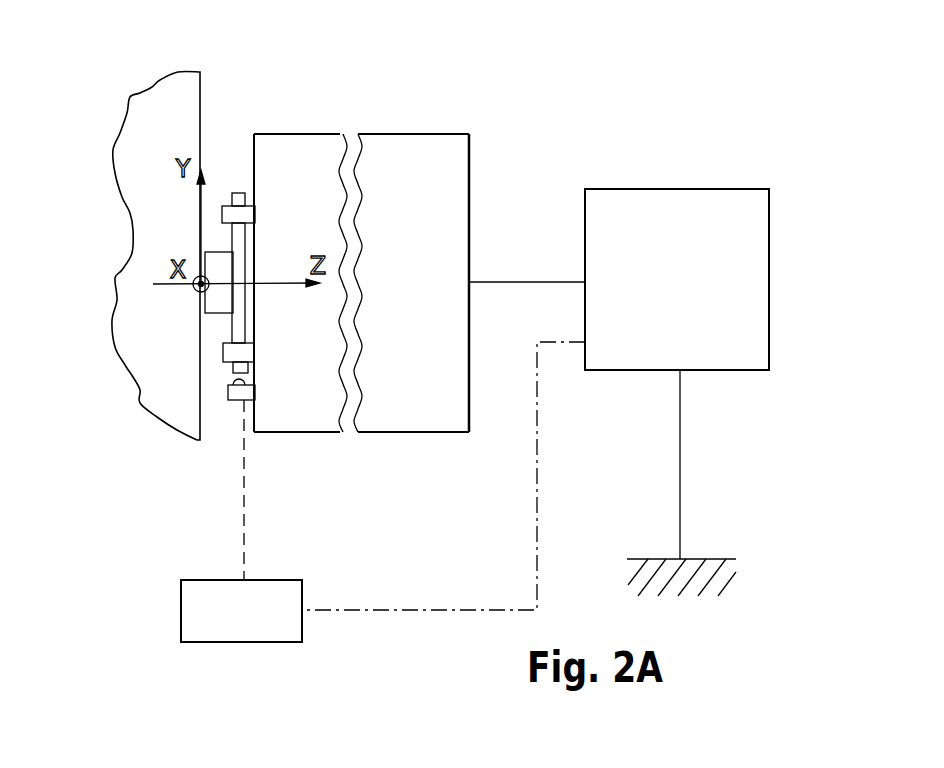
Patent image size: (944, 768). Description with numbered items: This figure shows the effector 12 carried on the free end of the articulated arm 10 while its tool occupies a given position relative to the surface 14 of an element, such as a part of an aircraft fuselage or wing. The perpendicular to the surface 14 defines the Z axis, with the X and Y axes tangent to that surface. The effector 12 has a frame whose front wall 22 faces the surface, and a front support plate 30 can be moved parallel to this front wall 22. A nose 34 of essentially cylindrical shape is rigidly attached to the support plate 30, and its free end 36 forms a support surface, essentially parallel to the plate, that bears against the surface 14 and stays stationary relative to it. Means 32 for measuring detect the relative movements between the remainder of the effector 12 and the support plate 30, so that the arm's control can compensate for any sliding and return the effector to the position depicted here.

The articulated arm 10 is at (629, 186).
The effector 12 is at (398, 122).
The surface 14 is at (203, 100).
The front wall 22 is at (254, 165).
The front support plate 30 is at (223, 327).
The means for measuring 32 is at (232, 404).
The nose 34 is at (213, 268).
The free end 36 is at (205, 312).